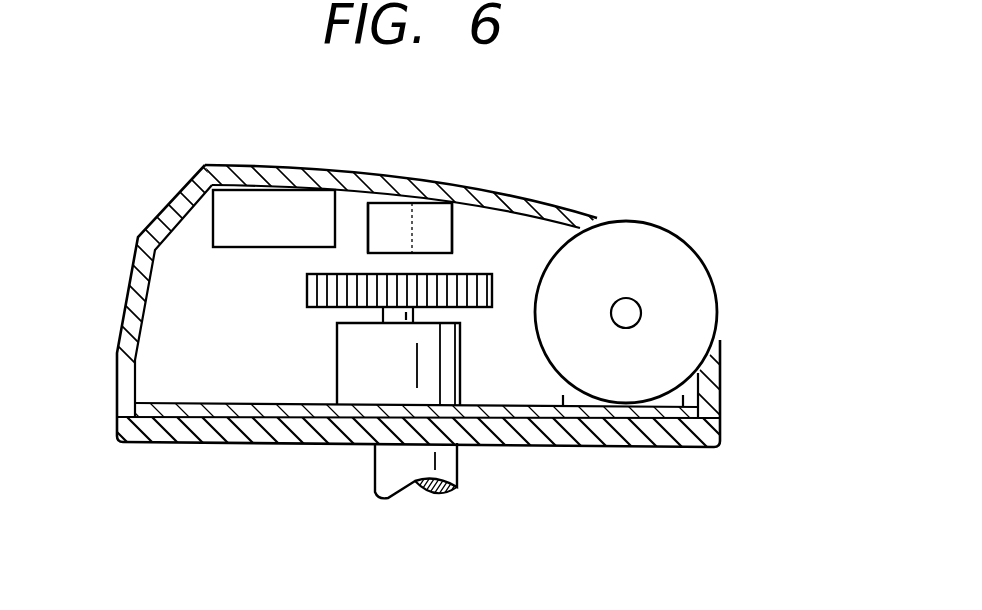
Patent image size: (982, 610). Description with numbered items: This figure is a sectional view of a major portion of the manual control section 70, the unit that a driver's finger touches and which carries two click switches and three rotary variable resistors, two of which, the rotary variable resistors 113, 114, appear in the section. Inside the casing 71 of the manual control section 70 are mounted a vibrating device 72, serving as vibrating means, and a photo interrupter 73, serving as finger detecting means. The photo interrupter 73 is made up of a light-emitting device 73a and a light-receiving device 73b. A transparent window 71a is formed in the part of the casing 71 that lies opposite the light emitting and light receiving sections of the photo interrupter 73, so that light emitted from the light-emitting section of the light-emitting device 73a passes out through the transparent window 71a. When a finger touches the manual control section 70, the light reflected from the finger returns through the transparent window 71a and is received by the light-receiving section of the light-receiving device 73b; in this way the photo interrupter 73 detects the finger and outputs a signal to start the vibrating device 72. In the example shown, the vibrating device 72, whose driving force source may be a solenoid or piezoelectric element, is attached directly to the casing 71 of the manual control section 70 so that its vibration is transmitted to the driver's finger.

The manual control section 70 is at (540, 190).
The casing 71 is at (170, 204).
The transparent window 71a is at (432, 178).
The vibrating device 72 is at (297, 200).
The photo interrupter 73 is at (397, 203).
The light-emitting device 73a is at (380, 240).
The light-receiving device 73b is at (443, 238).
The rotary variable resistor 113 is at (698, 253).
The rotary variable resistor 114 is at (490, 274).